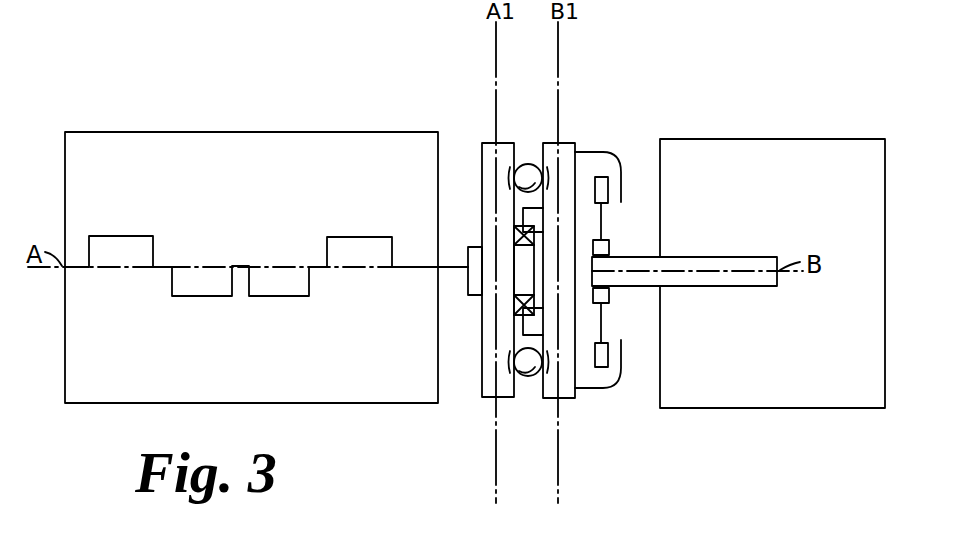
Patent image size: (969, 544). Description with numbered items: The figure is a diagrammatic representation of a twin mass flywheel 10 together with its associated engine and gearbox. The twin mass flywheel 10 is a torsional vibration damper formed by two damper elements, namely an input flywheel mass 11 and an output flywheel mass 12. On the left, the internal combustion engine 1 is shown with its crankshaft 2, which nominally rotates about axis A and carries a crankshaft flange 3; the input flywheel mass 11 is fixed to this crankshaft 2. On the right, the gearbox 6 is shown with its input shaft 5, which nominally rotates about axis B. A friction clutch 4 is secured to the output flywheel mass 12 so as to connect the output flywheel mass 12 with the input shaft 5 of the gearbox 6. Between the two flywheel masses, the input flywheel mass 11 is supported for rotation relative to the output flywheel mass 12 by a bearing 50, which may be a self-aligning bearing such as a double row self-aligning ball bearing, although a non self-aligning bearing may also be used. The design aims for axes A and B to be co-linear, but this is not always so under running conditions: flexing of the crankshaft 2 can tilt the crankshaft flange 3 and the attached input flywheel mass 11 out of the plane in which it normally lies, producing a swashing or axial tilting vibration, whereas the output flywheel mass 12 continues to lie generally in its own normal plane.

The internal combustion engine 1 is at (114, 145).
The crankshaft 2 is at (180, 298).
The crankshaft flange 3 is at (470, 252).
The friction clutch 4 is at (607, 150).
The input shaft 5 is at (652, 288).
The gearbox 6 is at (785, 382).
The twin mass flywheel 10 is at (479, 284).
The input flywheel mass 11 is at (488, 388).
The output flywheel mass 12 is at (566, 388).
The bearing 50 is at (517, 230).